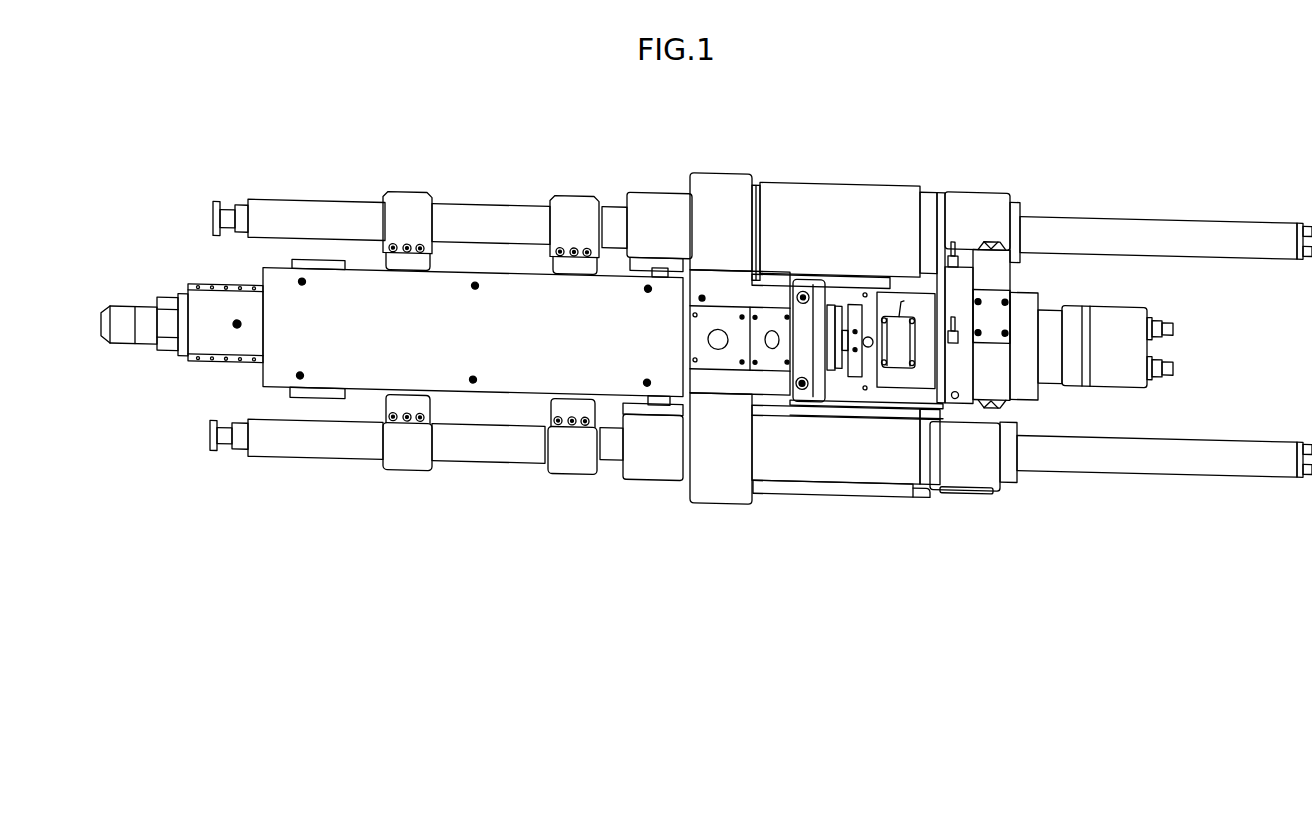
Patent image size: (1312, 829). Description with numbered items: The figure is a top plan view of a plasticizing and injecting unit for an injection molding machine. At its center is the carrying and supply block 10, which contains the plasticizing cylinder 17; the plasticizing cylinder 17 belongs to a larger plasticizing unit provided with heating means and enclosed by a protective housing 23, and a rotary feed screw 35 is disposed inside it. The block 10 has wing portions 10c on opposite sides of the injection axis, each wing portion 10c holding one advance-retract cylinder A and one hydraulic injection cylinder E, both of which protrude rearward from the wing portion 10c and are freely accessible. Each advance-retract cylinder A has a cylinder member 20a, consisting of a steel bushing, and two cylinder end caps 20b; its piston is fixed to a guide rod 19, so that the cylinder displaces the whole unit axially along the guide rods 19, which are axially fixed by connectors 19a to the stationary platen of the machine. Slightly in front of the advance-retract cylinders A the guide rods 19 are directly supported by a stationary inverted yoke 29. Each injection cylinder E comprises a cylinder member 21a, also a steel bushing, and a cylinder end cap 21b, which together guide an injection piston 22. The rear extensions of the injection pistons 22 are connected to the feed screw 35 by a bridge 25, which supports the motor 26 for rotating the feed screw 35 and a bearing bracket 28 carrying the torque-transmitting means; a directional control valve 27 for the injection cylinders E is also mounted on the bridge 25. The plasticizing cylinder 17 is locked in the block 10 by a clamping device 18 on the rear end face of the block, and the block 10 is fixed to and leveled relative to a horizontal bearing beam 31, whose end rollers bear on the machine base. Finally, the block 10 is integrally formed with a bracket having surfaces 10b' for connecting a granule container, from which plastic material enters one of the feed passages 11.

The carrying and supply block 10 is at (738, 171).
The surfaces 10b' is at (790, 210).
The wing portions 10c is at (715, 215).
The feed passages 11 is at (718, 348).
The plasticizing cylinder 17 is at (184, 364).
The clamping device 18 is at (803, 388).
The guide rods 19 is at (327, 215).
The connectors 19a is at (217, 201).
The cylinder member 20a is at (880, 450).
The cylinder end caps 20b is at (628, 470).
The cylinder member 21a is at (840, 225).
The cylinder end cap 21b is at (935, 215).
The injection piston 22 is at (650, 191).
The protective housing 23 is at (403, 347).
The bridge 25 is at (985, 215).
The motor 26 is at (1105, 345).
The directional control valve 27 is at (998, 317).
The bearing bracket 28 is at (913, 375).
The inverted yoke 29 is at (574, 455).
The bearing beam 31 is at (868, 282).
The rotary feed screw 35 is at (838, 380).
The advance-retract cylinders A is at (800, 491).
The injection cylinders E is at (875, 182).